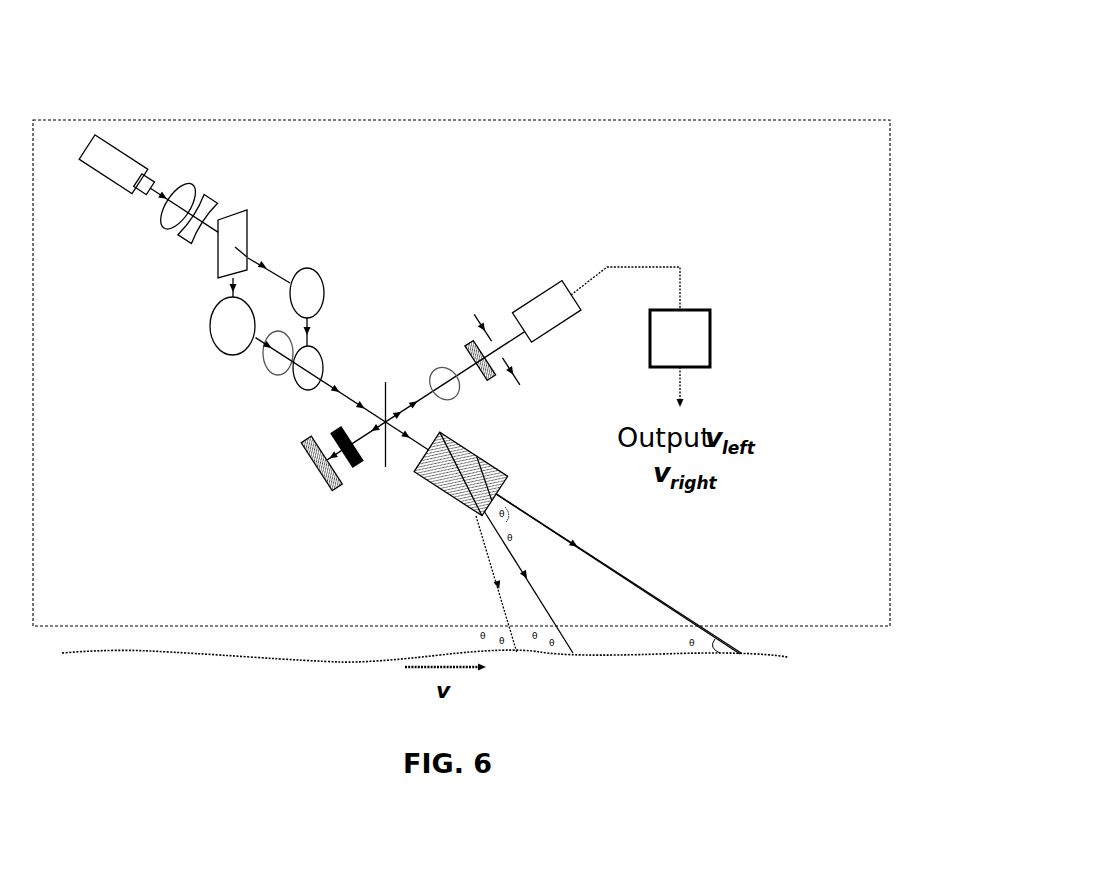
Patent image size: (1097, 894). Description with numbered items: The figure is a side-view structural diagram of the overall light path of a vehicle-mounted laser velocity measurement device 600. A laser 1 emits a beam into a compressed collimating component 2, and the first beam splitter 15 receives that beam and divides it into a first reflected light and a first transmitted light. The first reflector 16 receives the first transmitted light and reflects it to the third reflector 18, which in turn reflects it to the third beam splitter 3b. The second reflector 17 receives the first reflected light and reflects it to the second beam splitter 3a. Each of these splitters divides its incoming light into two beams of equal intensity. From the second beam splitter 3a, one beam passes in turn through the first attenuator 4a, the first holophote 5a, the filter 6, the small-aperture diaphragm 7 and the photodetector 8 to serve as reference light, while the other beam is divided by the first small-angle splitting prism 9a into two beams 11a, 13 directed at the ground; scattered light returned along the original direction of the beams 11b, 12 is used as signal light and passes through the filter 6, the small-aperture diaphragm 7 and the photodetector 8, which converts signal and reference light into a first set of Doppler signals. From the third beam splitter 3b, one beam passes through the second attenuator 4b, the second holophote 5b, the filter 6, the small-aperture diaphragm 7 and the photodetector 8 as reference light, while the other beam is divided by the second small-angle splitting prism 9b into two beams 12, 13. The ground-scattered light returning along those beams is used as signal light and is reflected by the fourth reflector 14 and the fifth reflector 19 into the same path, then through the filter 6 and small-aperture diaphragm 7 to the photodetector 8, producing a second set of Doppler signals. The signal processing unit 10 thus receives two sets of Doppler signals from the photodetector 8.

The vehicle-mounted laser velocity measurement device 600 is at (778, 35).
The laser 1 is at (80, 154).
The compressed collimating component 2 is at (170, 228).
The first beam splitter 15 is at (248, 223).
The first reflector 16 is at (325, 293).
The second reflector 17 is at (212, 333).
The fourth reflector 14 is at (273, 373).
The third reflector 18 is at (323, 350).
The second beam splitter 3a is at (399, 416).
The third beam splitter 3b is at (408, 383).
The first attenuator 4a is at (382, 465).
The second attenuator 4b is at (355, 473).
The first holophote 5a is at (360, 483).
The second holophote 5b is at (340, 492).
The fifth reflector 19 is at (445, 400).
The filter 6 is at (488, 375).
The small-aperture diaphragm 7 is at (518, 385).
The photodetector 8 is at (557, 330).
The signal processing unit 10 is at (697, 308).
The first small-angle splitting prism 9a is at (497, 474).
The second small-angle splitting prism 9b is at (508, 466).
The beam 11a is at (618, 574).
The beam 11b is at (597, 558).
The beam 12 is at (507, 607).
The beam 13 is at (545, 605).